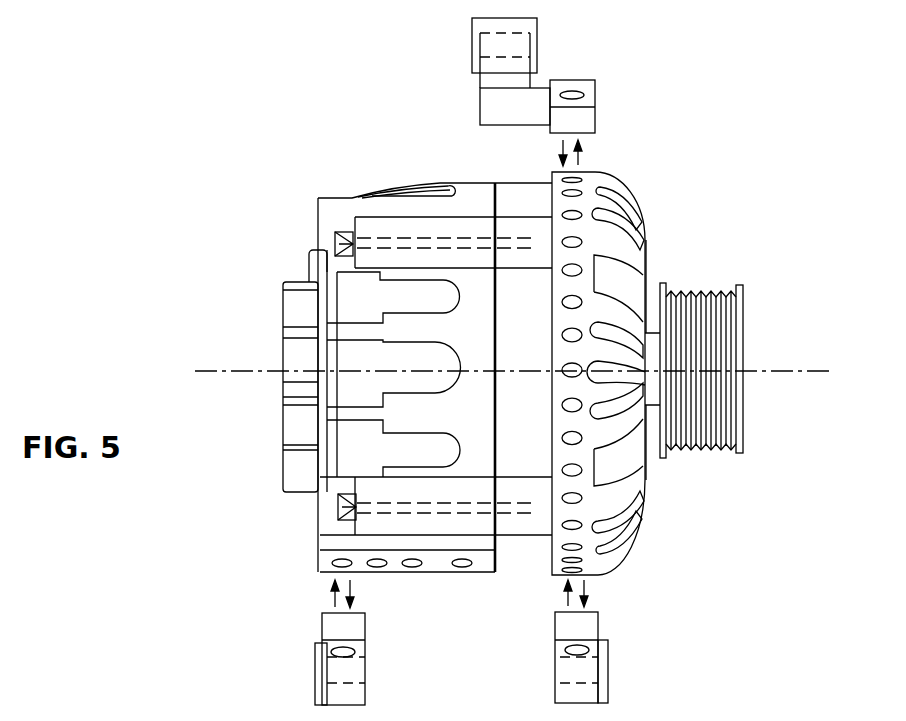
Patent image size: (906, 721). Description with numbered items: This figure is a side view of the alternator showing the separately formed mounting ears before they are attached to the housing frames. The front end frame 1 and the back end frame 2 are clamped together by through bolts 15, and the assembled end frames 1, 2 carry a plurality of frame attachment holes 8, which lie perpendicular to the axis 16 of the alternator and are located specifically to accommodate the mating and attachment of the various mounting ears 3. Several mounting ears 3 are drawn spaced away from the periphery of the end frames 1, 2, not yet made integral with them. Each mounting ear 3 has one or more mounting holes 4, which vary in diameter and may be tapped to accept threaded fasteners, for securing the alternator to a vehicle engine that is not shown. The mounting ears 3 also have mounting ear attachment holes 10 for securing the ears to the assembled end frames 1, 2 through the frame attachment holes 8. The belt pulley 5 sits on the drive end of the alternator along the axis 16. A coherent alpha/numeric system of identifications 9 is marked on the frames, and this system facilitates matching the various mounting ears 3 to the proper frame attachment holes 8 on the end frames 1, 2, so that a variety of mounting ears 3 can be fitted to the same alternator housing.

The front end frame 1 is at (628, 247).
The back end frame 2 is at (337, 212).
The mounting ear 3 is at (493, 82).
The mounting hole 4 is at (537, 42).
The belt pulley 5 is at (675, 488).
The frame attachment hole 8 is at (572, 216).
The identification 9 is at (560, 297).
The mounting ear attachment hole 10 is at (570, 95).
The through bolt 15 is at (335, 240).
The axis 16 is at (270, 372).